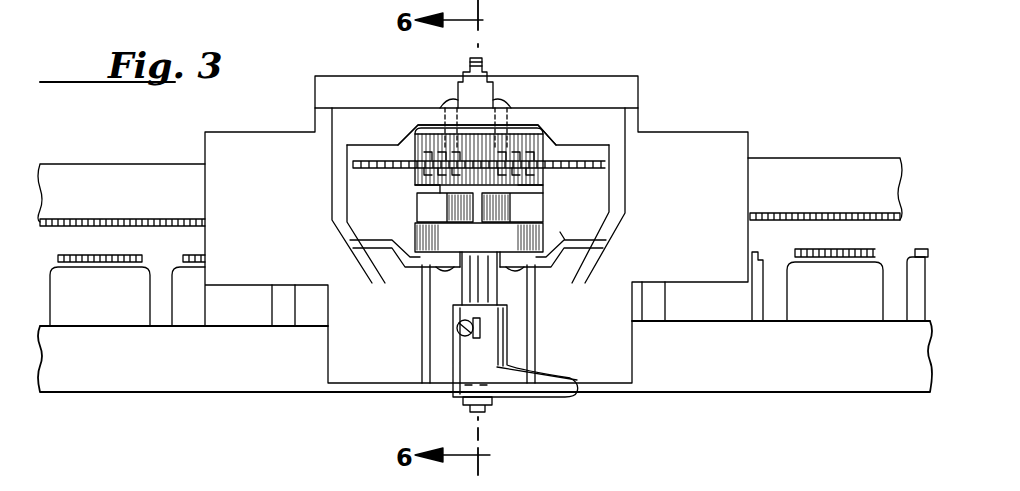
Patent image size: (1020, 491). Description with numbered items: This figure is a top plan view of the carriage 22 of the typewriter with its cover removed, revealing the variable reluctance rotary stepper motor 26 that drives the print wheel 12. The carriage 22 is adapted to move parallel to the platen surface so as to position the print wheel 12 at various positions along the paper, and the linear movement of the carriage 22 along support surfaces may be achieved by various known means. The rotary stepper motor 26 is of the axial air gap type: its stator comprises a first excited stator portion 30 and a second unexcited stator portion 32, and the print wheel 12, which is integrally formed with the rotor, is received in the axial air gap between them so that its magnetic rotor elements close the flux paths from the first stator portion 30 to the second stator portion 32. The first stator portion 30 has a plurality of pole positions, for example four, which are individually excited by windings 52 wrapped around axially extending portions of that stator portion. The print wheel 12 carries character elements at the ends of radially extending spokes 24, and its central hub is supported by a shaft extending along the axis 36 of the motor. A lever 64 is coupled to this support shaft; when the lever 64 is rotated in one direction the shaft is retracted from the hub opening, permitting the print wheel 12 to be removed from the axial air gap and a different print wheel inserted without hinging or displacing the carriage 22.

The print wheel 12 is at (577, 168).
The carriage 22 is at (618, 177).
The spokes 24 is at (772, 178).
The rotary stepper motor 26 is at (538, 133).
The first excited stator portion 30 is at (418, 177).
The second unexcited stator portion 32 is at (437, 147).
The axis 36 is at (483, 12).
The windings 52 is at (428, 210).
The lever 64 is at (527, 397).